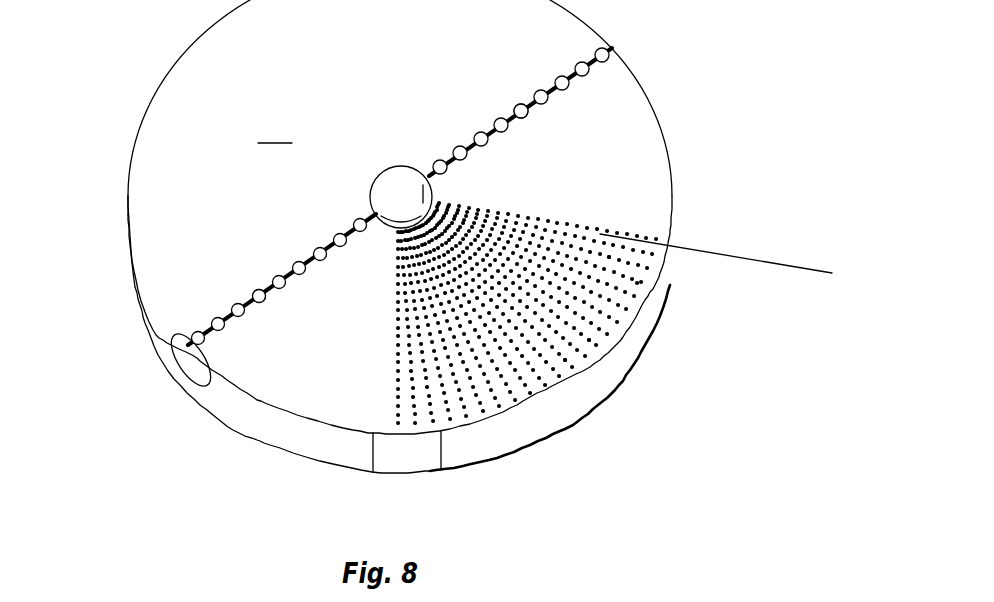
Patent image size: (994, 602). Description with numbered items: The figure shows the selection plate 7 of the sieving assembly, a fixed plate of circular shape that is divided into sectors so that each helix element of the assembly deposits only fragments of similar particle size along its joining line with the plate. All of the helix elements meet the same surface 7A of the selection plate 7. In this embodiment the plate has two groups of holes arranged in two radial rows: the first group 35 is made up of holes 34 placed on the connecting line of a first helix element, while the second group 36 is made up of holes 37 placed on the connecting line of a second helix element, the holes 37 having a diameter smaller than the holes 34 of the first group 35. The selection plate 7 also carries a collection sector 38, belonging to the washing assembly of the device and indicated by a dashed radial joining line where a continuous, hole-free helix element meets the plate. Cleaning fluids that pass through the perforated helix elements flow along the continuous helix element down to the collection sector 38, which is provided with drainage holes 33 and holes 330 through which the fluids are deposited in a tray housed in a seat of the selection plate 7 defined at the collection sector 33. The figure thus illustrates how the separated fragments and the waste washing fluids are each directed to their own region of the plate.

The selection plate 7 is at (143, 104).
The surface of the selection plate 7A is at (275, 130).
The drainage holes 33 is at (548, 343).
The holes of the collection sector 330 is at (588, 334).
The holes of the first group 34 is at (536, 118).
The first group of holes 35 is at (514, 109).
The second group of holes 36 is at (282, 276).
The holes of the second group 37 is at (261, 306).
The collection sector 38 is at (762, 258).